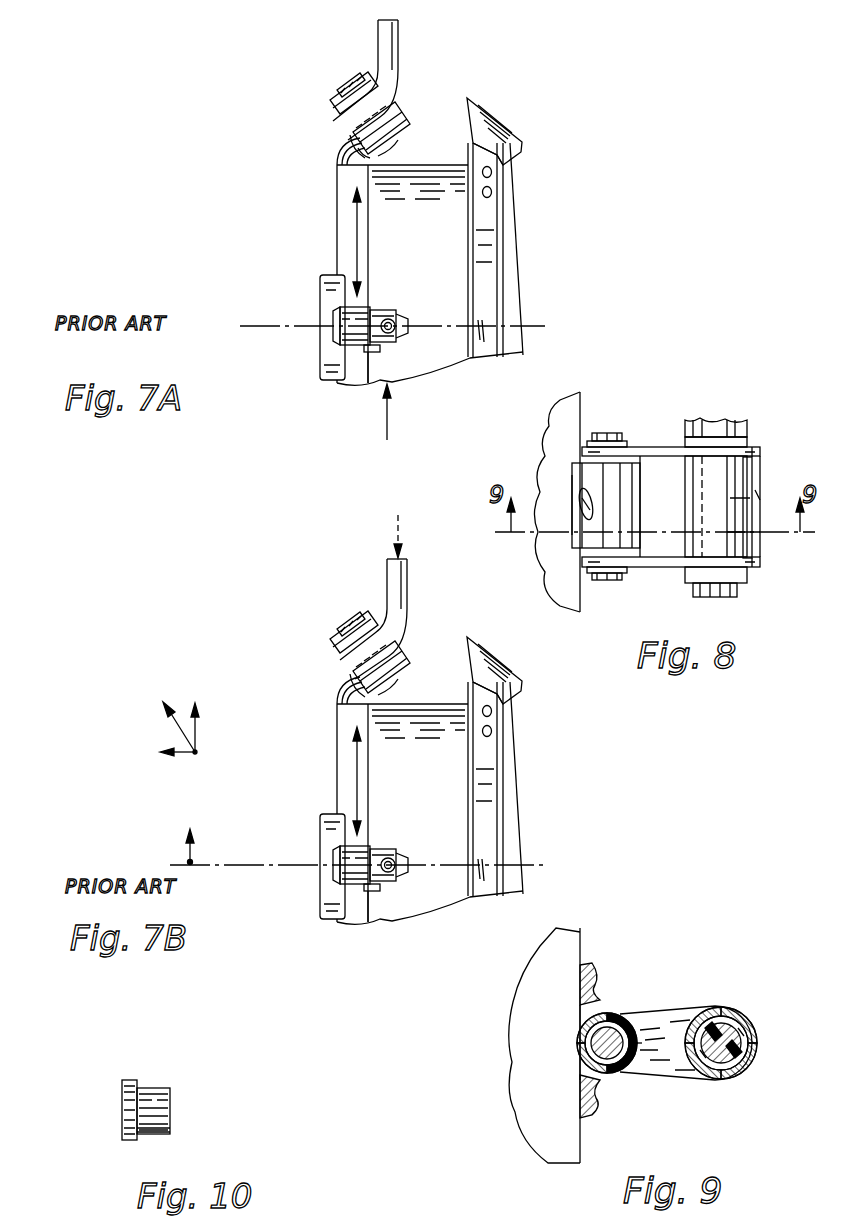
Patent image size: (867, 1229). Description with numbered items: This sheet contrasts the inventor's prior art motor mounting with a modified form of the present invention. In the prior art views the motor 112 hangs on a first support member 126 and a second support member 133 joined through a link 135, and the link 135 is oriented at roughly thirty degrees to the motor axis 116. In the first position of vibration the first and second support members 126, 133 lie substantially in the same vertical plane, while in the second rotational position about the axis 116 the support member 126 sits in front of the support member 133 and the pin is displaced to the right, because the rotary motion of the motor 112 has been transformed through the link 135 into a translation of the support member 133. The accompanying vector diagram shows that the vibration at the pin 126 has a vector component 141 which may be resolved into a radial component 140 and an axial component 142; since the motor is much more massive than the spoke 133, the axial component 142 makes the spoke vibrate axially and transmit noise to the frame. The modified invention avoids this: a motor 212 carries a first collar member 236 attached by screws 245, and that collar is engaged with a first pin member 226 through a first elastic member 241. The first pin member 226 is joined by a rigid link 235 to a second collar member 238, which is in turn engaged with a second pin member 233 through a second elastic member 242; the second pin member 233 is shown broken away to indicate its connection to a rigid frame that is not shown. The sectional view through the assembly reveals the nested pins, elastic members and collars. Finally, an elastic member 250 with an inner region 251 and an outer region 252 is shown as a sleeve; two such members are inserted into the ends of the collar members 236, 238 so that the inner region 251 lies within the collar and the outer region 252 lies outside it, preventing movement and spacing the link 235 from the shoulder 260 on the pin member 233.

In FIG. 7A, the motor 112 is at (432, 287).
In FIG. 7B, the motor 112 is at (430, 814).
In FIG. 7A, the motor axis 116 is at (305, 326).
In FIG. 7B, the motor axis 116 is at (357, 865).
In FIG. 7A, the first support member 126 is at (405, 130).
In FIG. 7B, the first support member 126 is at (464, 756).
In FIG. 7A, the second support member 133 is at (338, 118).
In FIG. 7B, the second support member 133 is at (326, 634).
In FIG. 7A, the link 135 is at (357, 132).
In FIG. 7B, the radial component 140 is at (200, 730).
In FIG. 7B, the vector component 141 is at (183, 740).
In FIG. 7B, the axial component 142 is at (187, 757).
In FIG. 8, the motor 212 is at (572, 464).
In FIG. 9, the motor 212 is at (560, 1055).
In FIG. 8, the first pin member 226 is at (605, 580).
In FIG. 9, the first pin member 226 is at (612, 1082).
In FIG. 8, the second pin member 233 is at (750, 492).
In FIG. 9, the second pin member 233 is at (712, 1035).
In FIG. 8, the rigid link 235 is at (652, 447).
In FIG. 9, the rigid link 235 is at (663, 1007).
In FIG. 8, the first collar member 236 is at (630, 488).
In FIG. 9, the first collar member 236 is at (640, 1058).
In FIG. 8, the second collar member 238 is at (750, 483).
In FIG. 9, the second collar member 238 is at (745, 1068).
In FIG. 8, the first elastic member 241 is at (640, 552).
In FIG. 9, the first elastic member 241 is at (607, 1010).
In FIG. 8, the second elastic member 242 is at (748, 448).
In FIG. 9, the second elastic member 242 is at (745, 1032).
In FIG. 8, the screws 245 is at (592, 504).
In FIG. 9, the screws 245 is at (588, 978).
In FIG. 10, the elastic member 250 is at (153, 1088).
In FIG. 10, the inner region 251 is at (170, 1133).
In FIG. 10, the outer region 252 is at (130, 1140).
In FIG. 8, the shoulder 260 is at (742, 420).